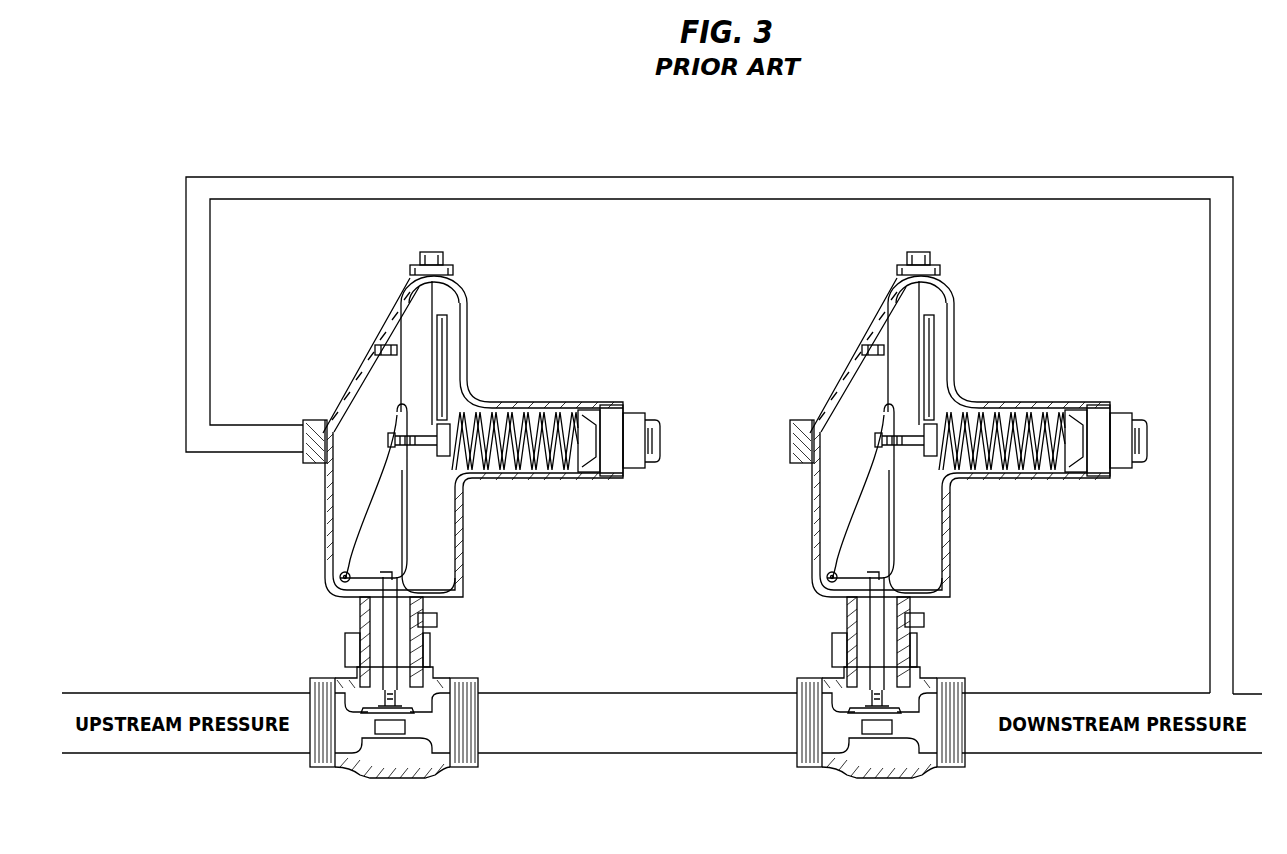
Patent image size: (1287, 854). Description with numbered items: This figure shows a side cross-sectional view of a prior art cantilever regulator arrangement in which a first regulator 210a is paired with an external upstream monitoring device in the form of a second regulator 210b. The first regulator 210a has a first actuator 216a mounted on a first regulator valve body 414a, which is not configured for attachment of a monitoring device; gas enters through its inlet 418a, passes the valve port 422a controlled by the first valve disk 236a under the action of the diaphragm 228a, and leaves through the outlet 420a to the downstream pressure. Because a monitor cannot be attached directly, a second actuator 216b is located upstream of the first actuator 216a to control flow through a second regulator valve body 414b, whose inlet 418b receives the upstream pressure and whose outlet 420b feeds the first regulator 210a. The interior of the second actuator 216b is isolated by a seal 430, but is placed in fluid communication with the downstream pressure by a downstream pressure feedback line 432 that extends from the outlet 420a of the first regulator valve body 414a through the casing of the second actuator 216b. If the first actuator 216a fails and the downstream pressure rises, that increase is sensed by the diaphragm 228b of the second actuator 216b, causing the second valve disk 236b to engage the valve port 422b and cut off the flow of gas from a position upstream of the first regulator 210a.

The first regulator 210a is at (944, 526).
The second regulator 210b is at (520, 286).
The first actuator 216a is at (828, 347).
The second actuator 216b is at (365, 298).
The diaphragm 228a is at (978, 367).
The diaphragm 228b is at (447, 350).
The first valve disk 236a is at (835, 668).
The second valve disk 236b is at (365, 710).
The first regulator valve body 414a is at (914, 737).
The second regulator valve body 414b is at (350, 772).
The inlet 418a is at (782, 742).
The inlet 418b is at (310, 760).
The outlet 420a is at (979, 700).
The outlet 420b is at (478, 755).
The valve port 422a is at (893, 757).
The valve port 422b is at (393, 733).
The seal 430 is at (411, 656).
The downstream pressure feedback line 432 is at (725, 177).